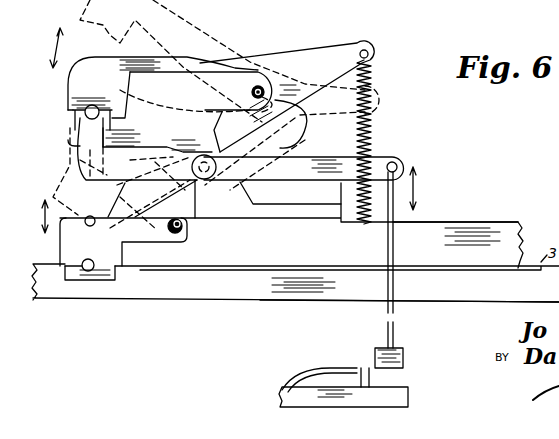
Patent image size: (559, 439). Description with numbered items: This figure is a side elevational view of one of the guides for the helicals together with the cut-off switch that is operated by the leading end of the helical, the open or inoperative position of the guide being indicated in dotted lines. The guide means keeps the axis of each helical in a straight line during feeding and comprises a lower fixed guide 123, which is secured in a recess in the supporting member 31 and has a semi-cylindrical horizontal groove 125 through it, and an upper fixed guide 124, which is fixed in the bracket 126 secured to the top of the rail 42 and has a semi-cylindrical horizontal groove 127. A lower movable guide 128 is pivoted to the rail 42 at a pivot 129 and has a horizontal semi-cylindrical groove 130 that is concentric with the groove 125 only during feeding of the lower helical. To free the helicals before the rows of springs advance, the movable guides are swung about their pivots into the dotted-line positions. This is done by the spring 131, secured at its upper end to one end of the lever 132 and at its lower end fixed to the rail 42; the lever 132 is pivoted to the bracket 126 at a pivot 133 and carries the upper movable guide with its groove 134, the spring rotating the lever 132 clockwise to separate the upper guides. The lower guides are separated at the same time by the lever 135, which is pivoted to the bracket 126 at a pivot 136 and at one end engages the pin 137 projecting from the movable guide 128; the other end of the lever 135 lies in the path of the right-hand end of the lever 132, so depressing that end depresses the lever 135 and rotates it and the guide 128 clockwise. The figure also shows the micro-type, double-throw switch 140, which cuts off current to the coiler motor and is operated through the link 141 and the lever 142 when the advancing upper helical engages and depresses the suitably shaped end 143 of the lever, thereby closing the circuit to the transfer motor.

The supporting member 31 is at (500, 298).
The rail 42 is at (507, 223).
The lower fixed guide 123 is at (92, 281).
The upper fixed guide 124 is at (68, 125).
The semi-cylindrical horizontal groove 125 is at (82, 272).
The bracket 126 is at (248, 190).
The semi-cylindrical horizontal groove 127 is at (80, 122).
The lower movable guide 128 is at (60, 243).
The pivot 129 is at (185, 234).
The horizontal semi-cylindrical groove 130 is at (97, 253).
The spring 131 is at (370, 132).
The lever 132 is at (316, 55).
The pivot 133 is at (206, 95).
The groove 134 is at (86, 106).
The lever 135 is at (297, 143).
The pivot 136 is at (205, 147).
The pin 137 is at (89, 216).
The switch 140 is at (355, 368).
The link 141 is at (393, 252).
The lever 142 is at (327, 177).
The end of the lever 143 is at (110, 127).